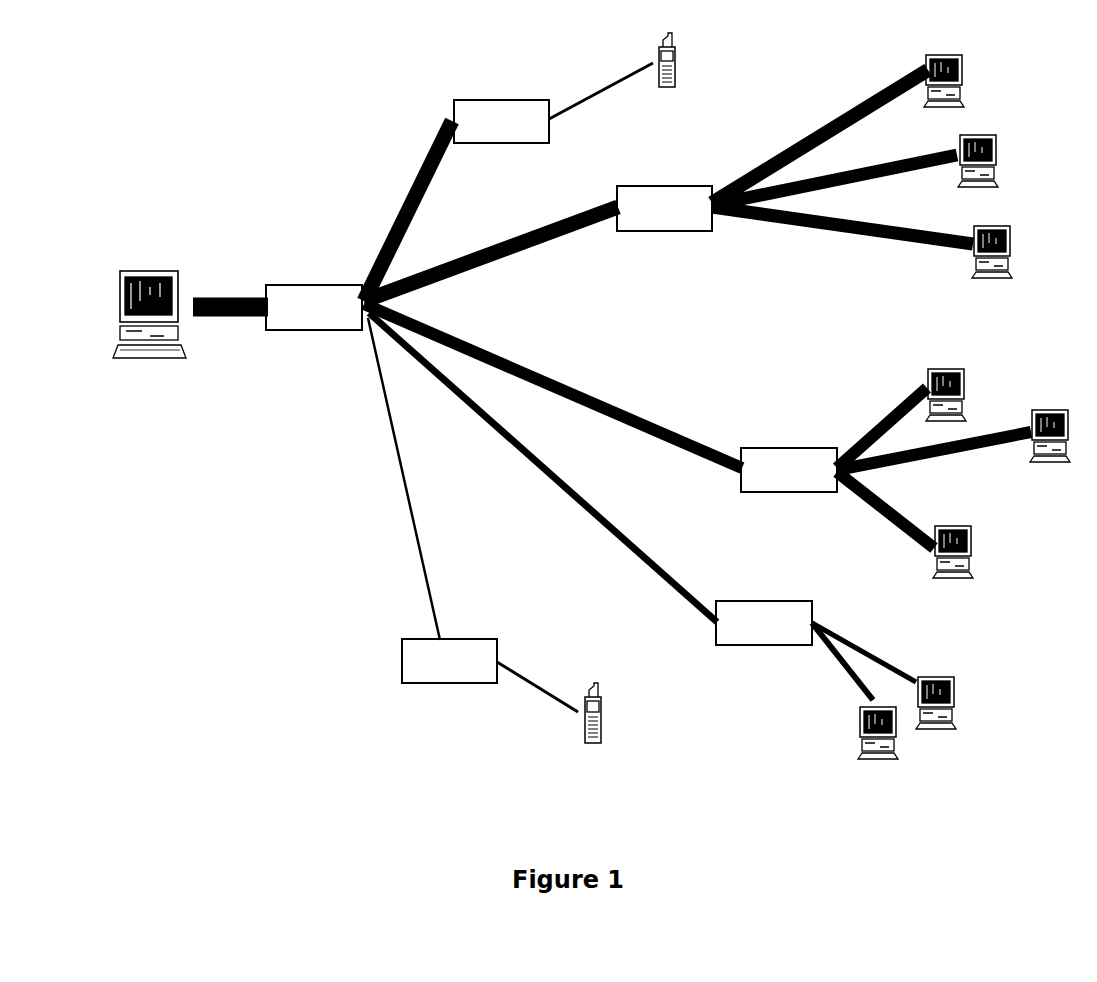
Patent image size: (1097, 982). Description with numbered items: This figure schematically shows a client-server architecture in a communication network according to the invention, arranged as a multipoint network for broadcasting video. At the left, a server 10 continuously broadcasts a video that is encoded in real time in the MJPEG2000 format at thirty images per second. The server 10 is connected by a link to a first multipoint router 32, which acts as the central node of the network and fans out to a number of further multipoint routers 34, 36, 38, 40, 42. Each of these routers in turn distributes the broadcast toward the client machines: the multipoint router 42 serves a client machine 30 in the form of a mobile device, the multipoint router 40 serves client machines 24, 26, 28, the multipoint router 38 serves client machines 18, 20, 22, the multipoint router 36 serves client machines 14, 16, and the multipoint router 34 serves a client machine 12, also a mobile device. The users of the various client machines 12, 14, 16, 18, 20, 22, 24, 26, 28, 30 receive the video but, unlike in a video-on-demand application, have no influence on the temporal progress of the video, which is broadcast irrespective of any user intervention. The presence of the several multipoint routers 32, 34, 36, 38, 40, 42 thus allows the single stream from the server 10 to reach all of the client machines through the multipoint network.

The server 10 is at (126, 290).
The client machine 12 is at (589, 745).
The client machine 14 is at (882, 755).
The client machine 16 is at (955, 692).
The client machine 18 is at (950, 578).
The client machine 20 is at (1050, 410).
The client machine 22 is at (937, 369).
The client machine 24 is at (1011, 238).
The client machine 26 is at (997, 153).
The client machine 28 is at (962, 73).
The client machine 30 is at (673, 53).
The multipoint router 32 is at (306, 322).
The multipoint router 34 is at (402, 660).
The multipoint router 36 is at (768, 640).
The multipoint router 38 is at (785, 452).
The multipoint router 40 is at (663, 195).
The multipoint router 42 is at (502, 103).